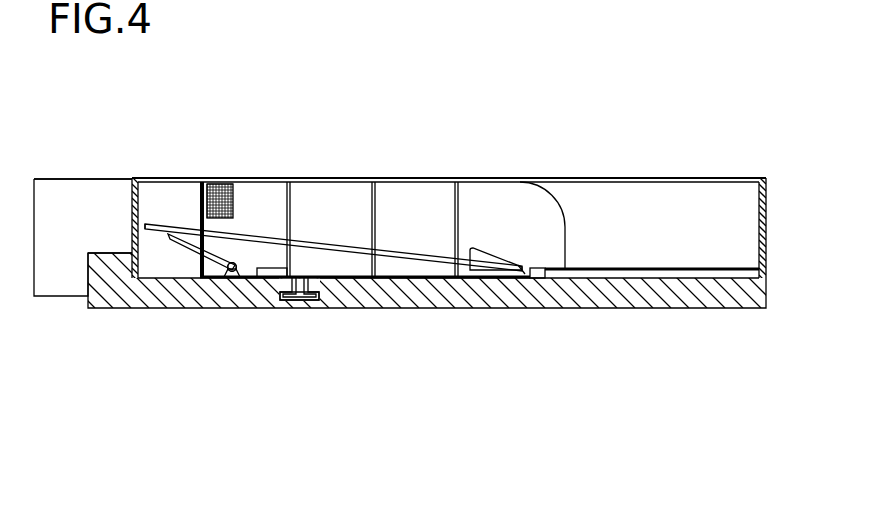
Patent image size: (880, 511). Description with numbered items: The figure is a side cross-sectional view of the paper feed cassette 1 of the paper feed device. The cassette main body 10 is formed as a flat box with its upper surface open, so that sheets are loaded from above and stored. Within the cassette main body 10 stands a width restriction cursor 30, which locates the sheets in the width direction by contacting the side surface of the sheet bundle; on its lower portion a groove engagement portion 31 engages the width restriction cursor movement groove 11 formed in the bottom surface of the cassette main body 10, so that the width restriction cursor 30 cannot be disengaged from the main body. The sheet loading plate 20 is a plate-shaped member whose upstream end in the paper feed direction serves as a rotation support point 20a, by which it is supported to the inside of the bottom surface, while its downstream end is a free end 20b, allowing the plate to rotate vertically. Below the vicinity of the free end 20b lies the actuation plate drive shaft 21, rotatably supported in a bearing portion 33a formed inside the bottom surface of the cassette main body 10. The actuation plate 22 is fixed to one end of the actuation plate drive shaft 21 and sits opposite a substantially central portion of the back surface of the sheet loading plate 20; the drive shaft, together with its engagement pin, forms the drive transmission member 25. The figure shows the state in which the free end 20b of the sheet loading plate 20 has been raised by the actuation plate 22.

The paper feed cassette 1 is at (702, 123).
The cassette main body 10 is at (608, 177).
The width restriction cursor movement groove 11 is at (300, 300).
The sheet loading plate 20 is at (258, 236).
The rotation support point 20a is at (525, 266).
The free end 20b is at (147, 223).
The actuation plate drive shaft 21 is at (232, 272).
The actuation plate 22 is at (196, 252).
The drive transmission member 25 is at (224, 335).
The width restriction cursor 30 is at (421, 206).
The groove engagement portion 31 is at (308, 300).
The bearing portion 33a is at (226, 278).